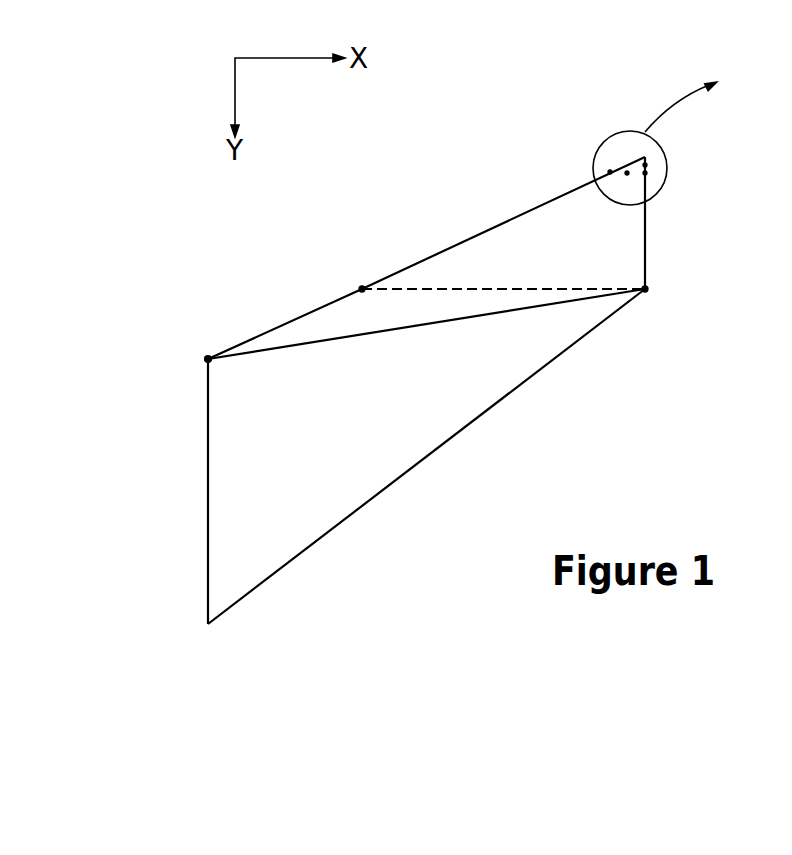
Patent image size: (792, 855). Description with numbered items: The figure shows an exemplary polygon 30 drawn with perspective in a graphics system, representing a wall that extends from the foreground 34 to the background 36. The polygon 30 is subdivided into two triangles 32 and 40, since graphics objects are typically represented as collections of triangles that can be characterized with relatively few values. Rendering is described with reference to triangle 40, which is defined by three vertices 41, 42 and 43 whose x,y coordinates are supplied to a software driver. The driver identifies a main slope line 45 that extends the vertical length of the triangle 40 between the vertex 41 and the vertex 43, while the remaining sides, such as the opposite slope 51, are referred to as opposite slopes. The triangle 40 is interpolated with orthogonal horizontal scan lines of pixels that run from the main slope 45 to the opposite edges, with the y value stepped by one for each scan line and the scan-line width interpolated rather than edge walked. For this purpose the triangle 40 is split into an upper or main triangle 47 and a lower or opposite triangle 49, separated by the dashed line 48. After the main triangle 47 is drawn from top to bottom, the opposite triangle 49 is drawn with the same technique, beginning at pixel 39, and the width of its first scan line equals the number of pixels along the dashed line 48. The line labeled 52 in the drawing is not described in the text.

The polygon 30 is at (447, 176).
The triangle 32 is at (327, 518).
The foreground 34 is at (94, 461).
The background 36 is at (767, 366).
The pixel 39 is at (361, 288).
The triangle 40 is at (633, 233).
The vertex 41 is at (660, 149).
The vertex 42 is at (645, 291).
The vertex 43 is at (207, 357).
The main slope line 45 is at (405, 268).
The main triangle 47 is at (560, 212).
The dashed line 48 is at (503, 289).
The opposite triangle 49 is at (318, 322).
The opposite slope 51 is at (645, 267).
The middle edge line 52 is at (370, 333).